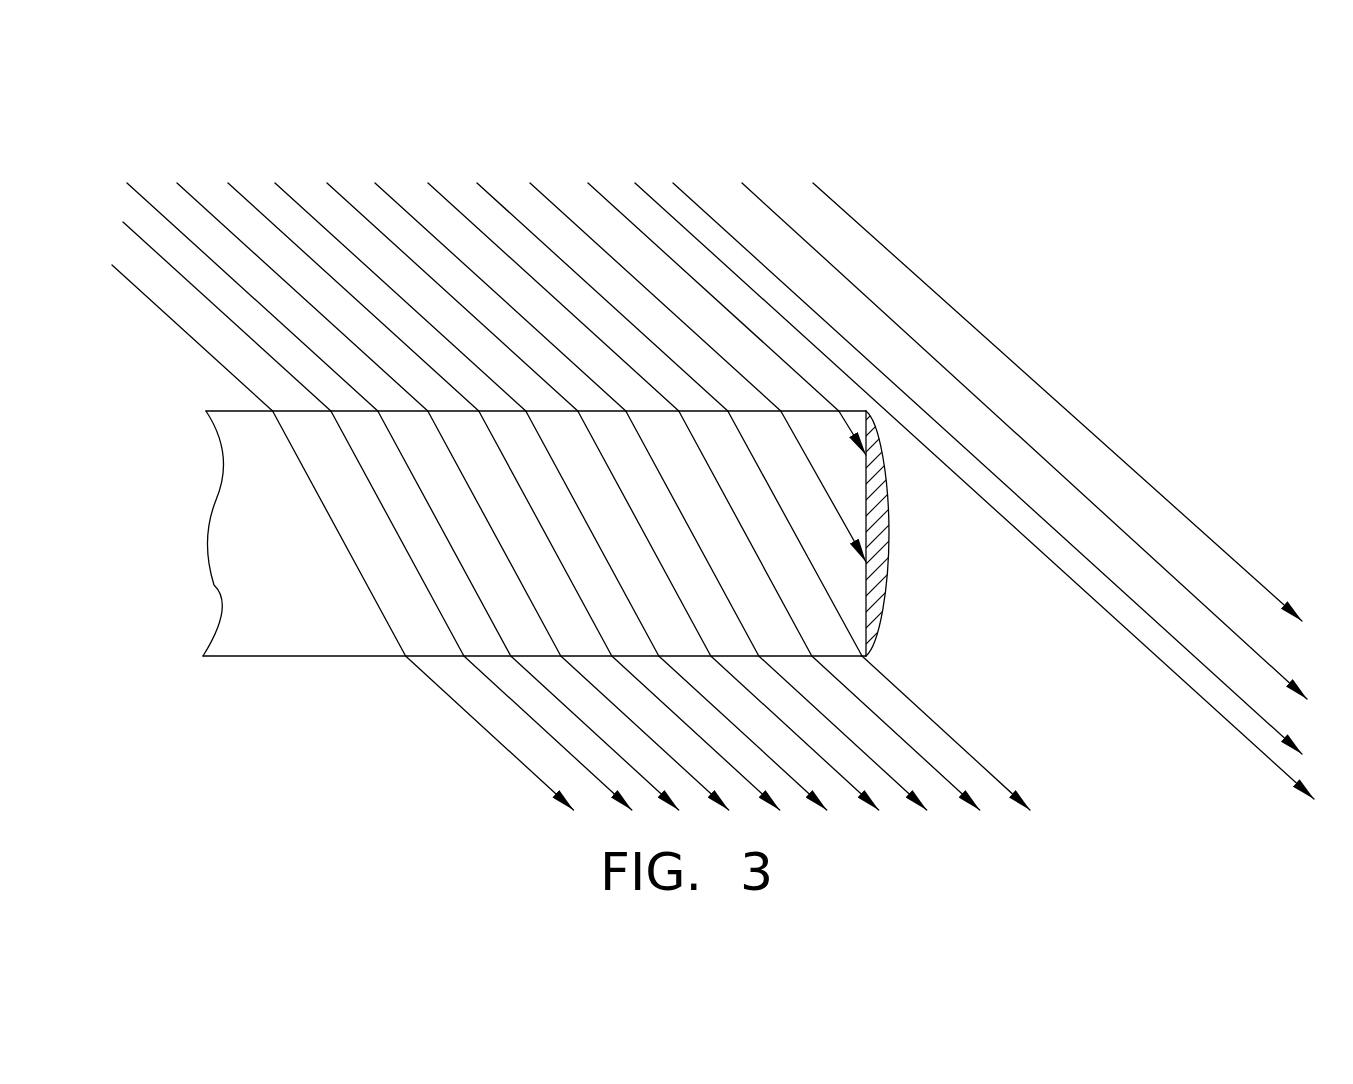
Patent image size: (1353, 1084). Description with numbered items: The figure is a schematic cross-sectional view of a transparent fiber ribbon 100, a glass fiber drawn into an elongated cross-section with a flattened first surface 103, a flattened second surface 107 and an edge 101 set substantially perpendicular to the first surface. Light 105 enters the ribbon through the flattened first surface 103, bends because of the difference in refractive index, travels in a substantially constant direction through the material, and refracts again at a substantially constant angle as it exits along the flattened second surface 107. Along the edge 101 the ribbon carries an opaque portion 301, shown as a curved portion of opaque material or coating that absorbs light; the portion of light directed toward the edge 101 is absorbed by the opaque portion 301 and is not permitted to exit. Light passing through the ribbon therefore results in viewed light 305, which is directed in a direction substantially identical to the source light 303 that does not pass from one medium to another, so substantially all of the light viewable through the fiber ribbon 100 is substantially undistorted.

The transparent fiber ribbon 100 is at (566, 540).
The edge 101 is at (866, 510).
The flattened first surface 103 is at (300, 409).
The light 105 is at (538, 182).
The flattened second surface 107 is at (368, 658).
The opaque portion 301 is at (884, 608).
The source light 303 is at (1113, 518).
The viewed light 305 is at (919, 754).